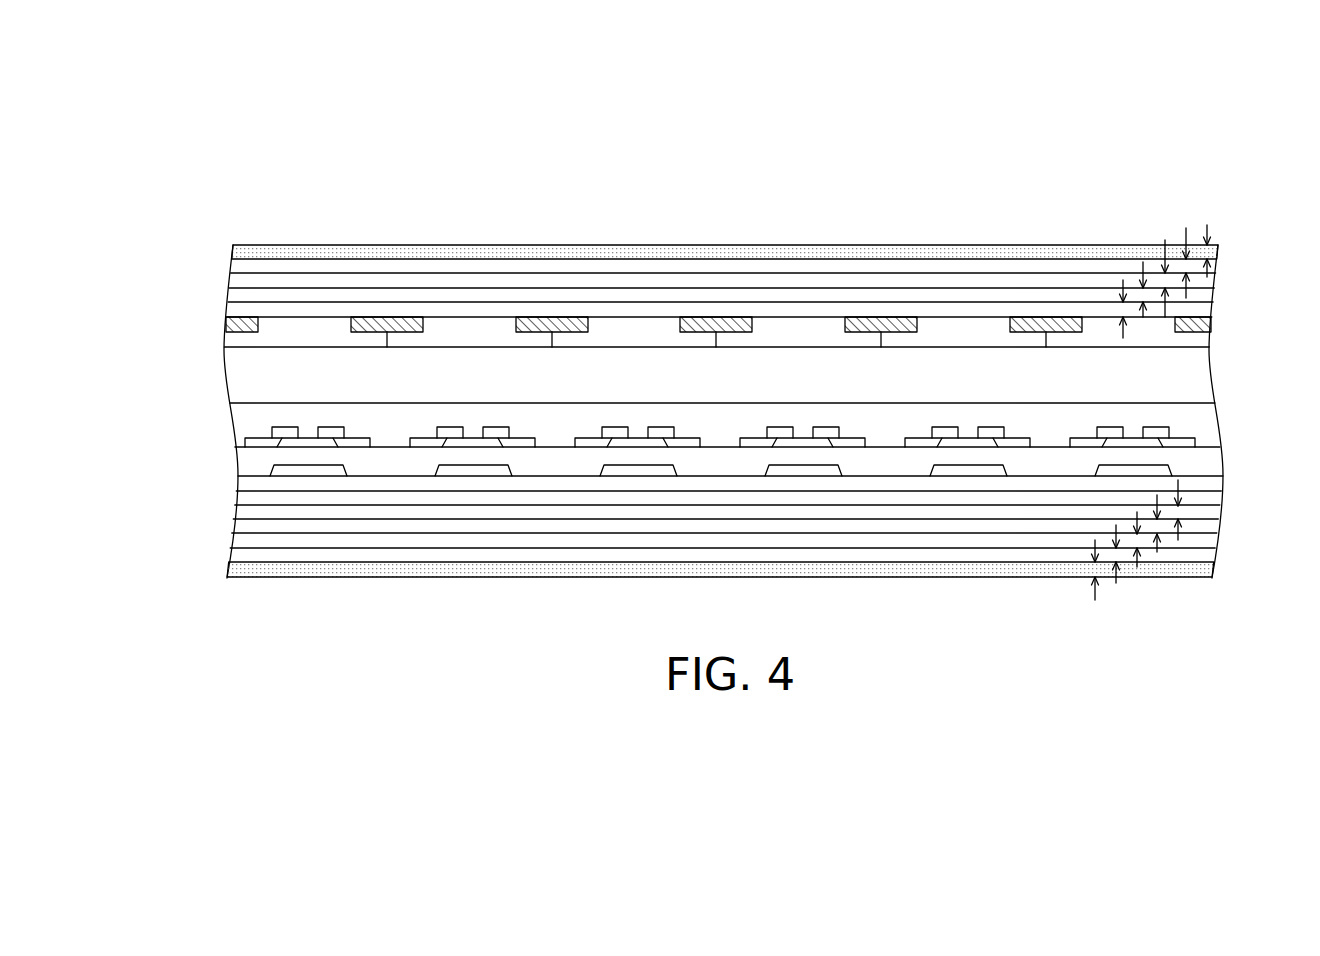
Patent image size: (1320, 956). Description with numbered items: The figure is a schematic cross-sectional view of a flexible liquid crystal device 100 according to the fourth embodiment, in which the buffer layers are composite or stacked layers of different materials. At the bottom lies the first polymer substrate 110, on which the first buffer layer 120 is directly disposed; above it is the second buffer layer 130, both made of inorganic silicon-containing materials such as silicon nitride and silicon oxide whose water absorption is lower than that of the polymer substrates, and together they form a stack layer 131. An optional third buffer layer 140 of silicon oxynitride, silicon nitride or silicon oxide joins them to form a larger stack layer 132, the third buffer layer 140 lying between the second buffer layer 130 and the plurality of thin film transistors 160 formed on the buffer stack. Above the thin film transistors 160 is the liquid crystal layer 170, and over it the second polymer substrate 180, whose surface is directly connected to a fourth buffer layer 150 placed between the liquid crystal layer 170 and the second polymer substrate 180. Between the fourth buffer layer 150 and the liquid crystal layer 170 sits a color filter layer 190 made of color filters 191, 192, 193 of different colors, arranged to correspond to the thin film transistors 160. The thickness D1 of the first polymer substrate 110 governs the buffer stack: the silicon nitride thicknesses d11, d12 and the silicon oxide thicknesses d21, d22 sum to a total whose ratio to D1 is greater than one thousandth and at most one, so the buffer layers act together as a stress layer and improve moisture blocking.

The flexible liquid crystal device 100 is at (243, 120).
The first polymer substrate 110 is at (1203, 570).
The first buffer layer 120 is at (222, 562).
The second buffer layer 130 is at (222, 533).
The stack layer 131 is at (653, 534).
The stack layer 132 is at (623, 520).
The third buffer layer 140 is at (222, 505).
The fourth buffer layer 150 is at (1222, 258).
The thin film transistors 160 is at (239, 415).
The liquid crystal layer 170 is at (749, 386).
The second polymer substrate 180 is at (240, 253).
The color filter layer 190 is at (718, 222).
The color filter 191 is at (859, 248).
The color filter 192 is at (761, 248).
The color filter 193 is at (605, 248).
The thickness of the first polymer substrate D1 is at (1207, 225).
The thickness of silicon nitride layer d11 is at (1186, 228).
The thickness of silicon nitride layer d12 is at (1143, 262).
The thickness of silicon oxide layer d21 is at (1165, 240).
The thickness of silicon oxide layer d22 is at (1123, 338).